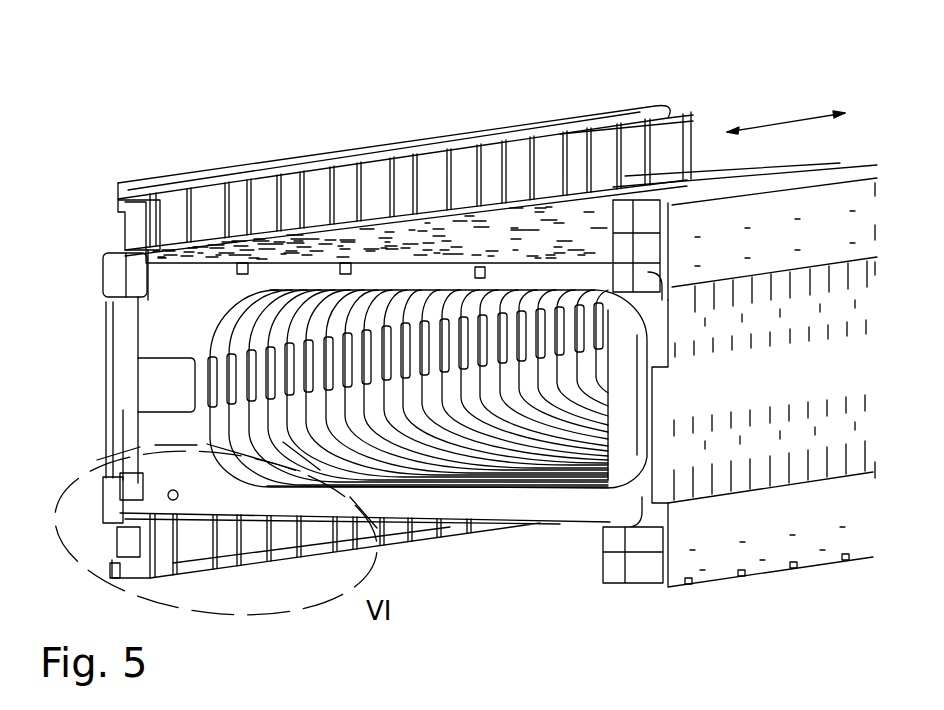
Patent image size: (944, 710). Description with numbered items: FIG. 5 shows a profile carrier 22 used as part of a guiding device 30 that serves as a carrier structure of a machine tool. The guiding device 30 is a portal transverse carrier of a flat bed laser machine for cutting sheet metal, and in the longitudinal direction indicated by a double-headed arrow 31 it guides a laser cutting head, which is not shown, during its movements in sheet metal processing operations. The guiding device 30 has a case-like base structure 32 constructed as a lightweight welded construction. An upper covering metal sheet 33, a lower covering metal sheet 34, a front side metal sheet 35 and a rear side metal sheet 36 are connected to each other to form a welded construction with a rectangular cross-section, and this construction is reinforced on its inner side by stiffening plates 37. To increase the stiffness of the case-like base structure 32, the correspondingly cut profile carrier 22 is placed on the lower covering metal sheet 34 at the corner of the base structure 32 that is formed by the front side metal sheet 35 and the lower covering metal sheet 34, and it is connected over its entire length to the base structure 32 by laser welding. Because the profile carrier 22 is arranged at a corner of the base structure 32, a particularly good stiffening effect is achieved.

The guiding device 30 is at (553, 108).
The double-headed arrow 31 is at (797, 120).
The upper covering metal sheet 33 is at (440, 232).
The front side metal sheet 35 is at (125, 229).
The stiffening plates 37 is at (187, 327).
The rear side metal sheet 36 is at (772, 397).
The profile carrier 22 is at (200, 572).
The lower covering metal sheet 34 is at (465, 528).
The base structure 32 is at (558, 530).